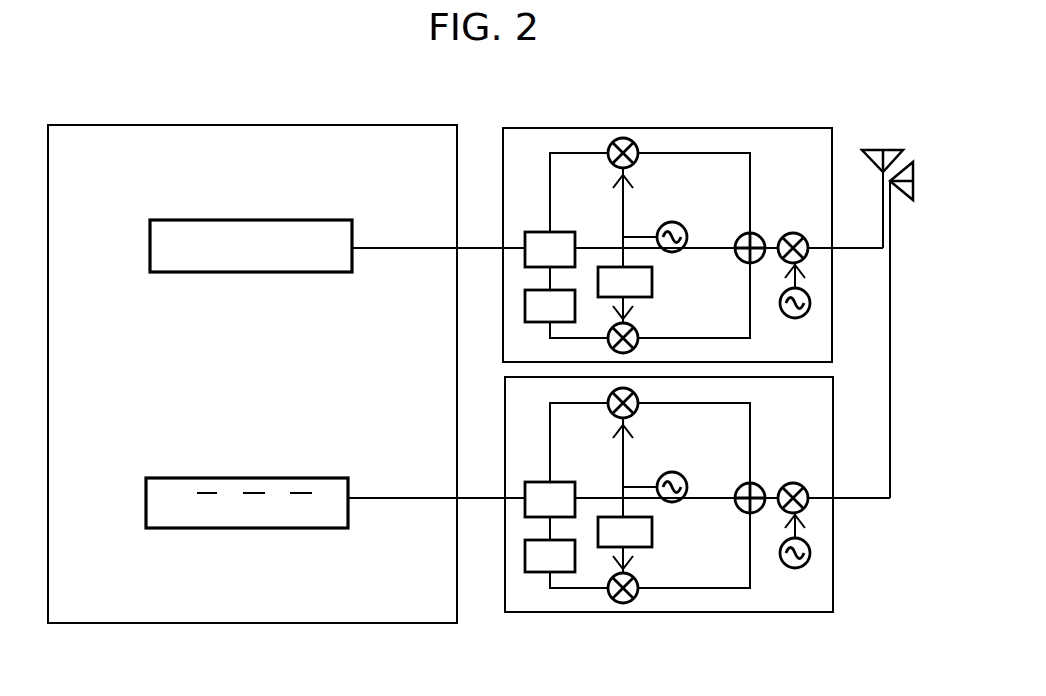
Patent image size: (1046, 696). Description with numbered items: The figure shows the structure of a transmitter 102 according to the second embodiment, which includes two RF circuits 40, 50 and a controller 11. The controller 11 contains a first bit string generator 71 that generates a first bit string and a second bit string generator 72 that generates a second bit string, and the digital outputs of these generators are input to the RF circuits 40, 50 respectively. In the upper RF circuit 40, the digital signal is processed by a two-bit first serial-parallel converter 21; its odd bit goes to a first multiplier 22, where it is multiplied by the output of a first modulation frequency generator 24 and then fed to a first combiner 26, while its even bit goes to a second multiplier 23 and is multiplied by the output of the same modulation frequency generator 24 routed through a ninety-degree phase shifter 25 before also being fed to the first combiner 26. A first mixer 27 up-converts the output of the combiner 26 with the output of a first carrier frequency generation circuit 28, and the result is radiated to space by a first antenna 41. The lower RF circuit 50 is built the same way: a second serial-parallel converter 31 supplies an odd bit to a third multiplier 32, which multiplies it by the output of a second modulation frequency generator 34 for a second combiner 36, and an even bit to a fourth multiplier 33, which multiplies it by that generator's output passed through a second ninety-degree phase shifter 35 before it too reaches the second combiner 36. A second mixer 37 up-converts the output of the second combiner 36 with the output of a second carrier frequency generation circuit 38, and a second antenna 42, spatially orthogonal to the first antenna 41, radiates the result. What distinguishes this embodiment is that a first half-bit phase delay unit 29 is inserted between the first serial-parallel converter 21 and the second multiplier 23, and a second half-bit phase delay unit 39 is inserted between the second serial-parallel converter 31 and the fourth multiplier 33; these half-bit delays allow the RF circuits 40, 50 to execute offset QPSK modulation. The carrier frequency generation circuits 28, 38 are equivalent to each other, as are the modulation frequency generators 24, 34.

The transmitter 102 is at (503, 93).
The controller 11 is at (148, 125).
The first bit string generator 71 is at (183, 220).
The second bit string generator 72 is at (183, 478).
The RF circuit 40 is at (590, 128).
The RF circuit 50 is at (590, 612).
The first serial-parallel converter 21 is at (540, 232).
The first multiplier 22 is at (634, 141).
The second multiplier 23 is at (636, 347).
The first modulation frequency generator 24 is at (686, 232).
The 90-degree phase shifter 25 is at (652, 281).
The first combiner 26 is at (756, 233).
The first mixer 27 is at (797, 233).
The first carrier frequency generation circuit 28 is at (810, 301).
The first half-bit phase delay unit 29 is at (542, 322).
The second serial-parallel converter 31 is at (540, 474).
The third multiplier 32 is at (650, 403).
The fourth multiplier 33 is at (651, 594).
The second modulation frequency generator 34 is at (691, 452).
The second 90-degree phase shifter 35 is at (659, 533).
The second combiner 36 is at (764, 472).
The second mixer 37 is at (805, 472).
The second carrier frequency generation circuit 38 is at (818, 567).
The second half-bit phase delay unit 39 is at (540, 577).
The first antenna 41 is at (868, 149).
The second antenna 42 is at (915, 190).